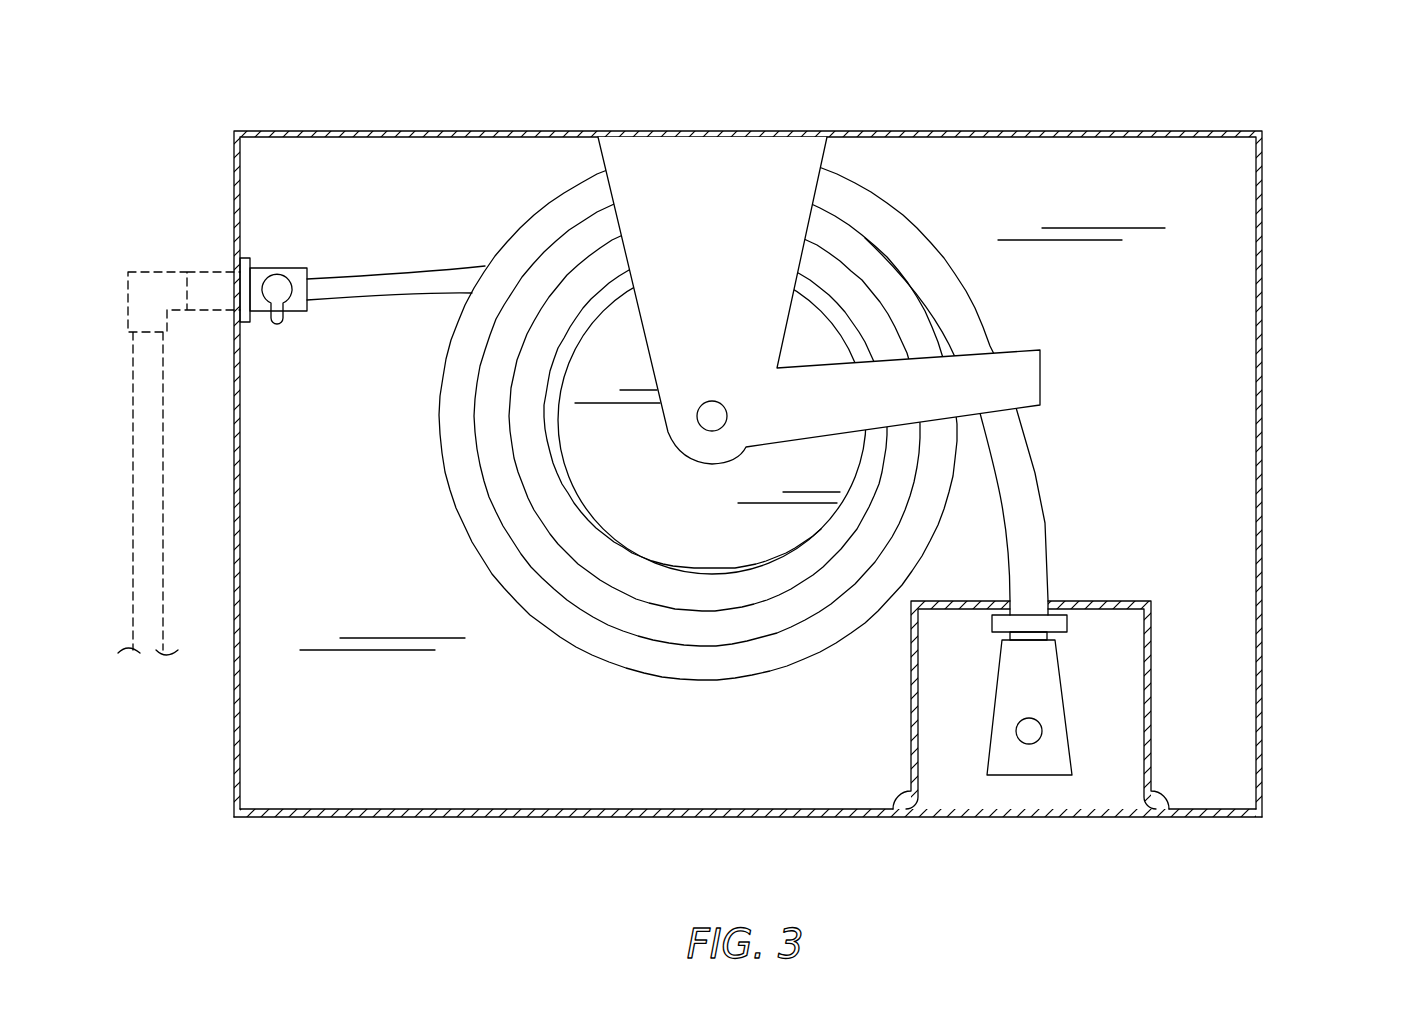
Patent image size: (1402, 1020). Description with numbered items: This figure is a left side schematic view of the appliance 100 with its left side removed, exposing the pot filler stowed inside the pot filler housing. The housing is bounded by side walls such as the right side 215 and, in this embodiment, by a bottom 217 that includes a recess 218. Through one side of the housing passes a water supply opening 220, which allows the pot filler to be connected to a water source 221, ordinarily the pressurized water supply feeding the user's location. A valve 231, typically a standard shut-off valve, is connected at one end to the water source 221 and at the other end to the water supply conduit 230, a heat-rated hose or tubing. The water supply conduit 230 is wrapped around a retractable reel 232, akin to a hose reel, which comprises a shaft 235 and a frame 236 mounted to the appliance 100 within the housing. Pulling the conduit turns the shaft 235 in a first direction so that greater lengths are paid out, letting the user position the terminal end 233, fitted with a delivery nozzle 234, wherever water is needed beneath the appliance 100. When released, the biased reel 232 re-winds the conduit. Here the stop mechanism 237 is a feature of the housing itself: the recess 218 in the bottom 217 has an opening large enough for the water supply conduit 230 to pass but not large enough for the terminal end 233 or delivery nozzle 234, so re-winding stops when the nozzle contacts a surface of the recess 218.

The appliance 100 is at (1318, 140).
The right side 215 is at (1170, 432).
The bottom 217 is at (678, 808).
The recess 218 is at (945, 790).
The water supply opening 220 is at (245, 258).
The water source 221 is at (145, 272).
The water supply conduit 230 is at (360, 273).
The valve 231 is at (278, 268).
The retractable reel 232 is at (680, 285).
The terminal end 233 is at (1057, 638).
The delivery nozzle 234 is at (1053, 776).
The shaft 235 is at (711, 420).
The frame 236 is at (675, 339).
The stop mechanism 237 is at (1067, 625).